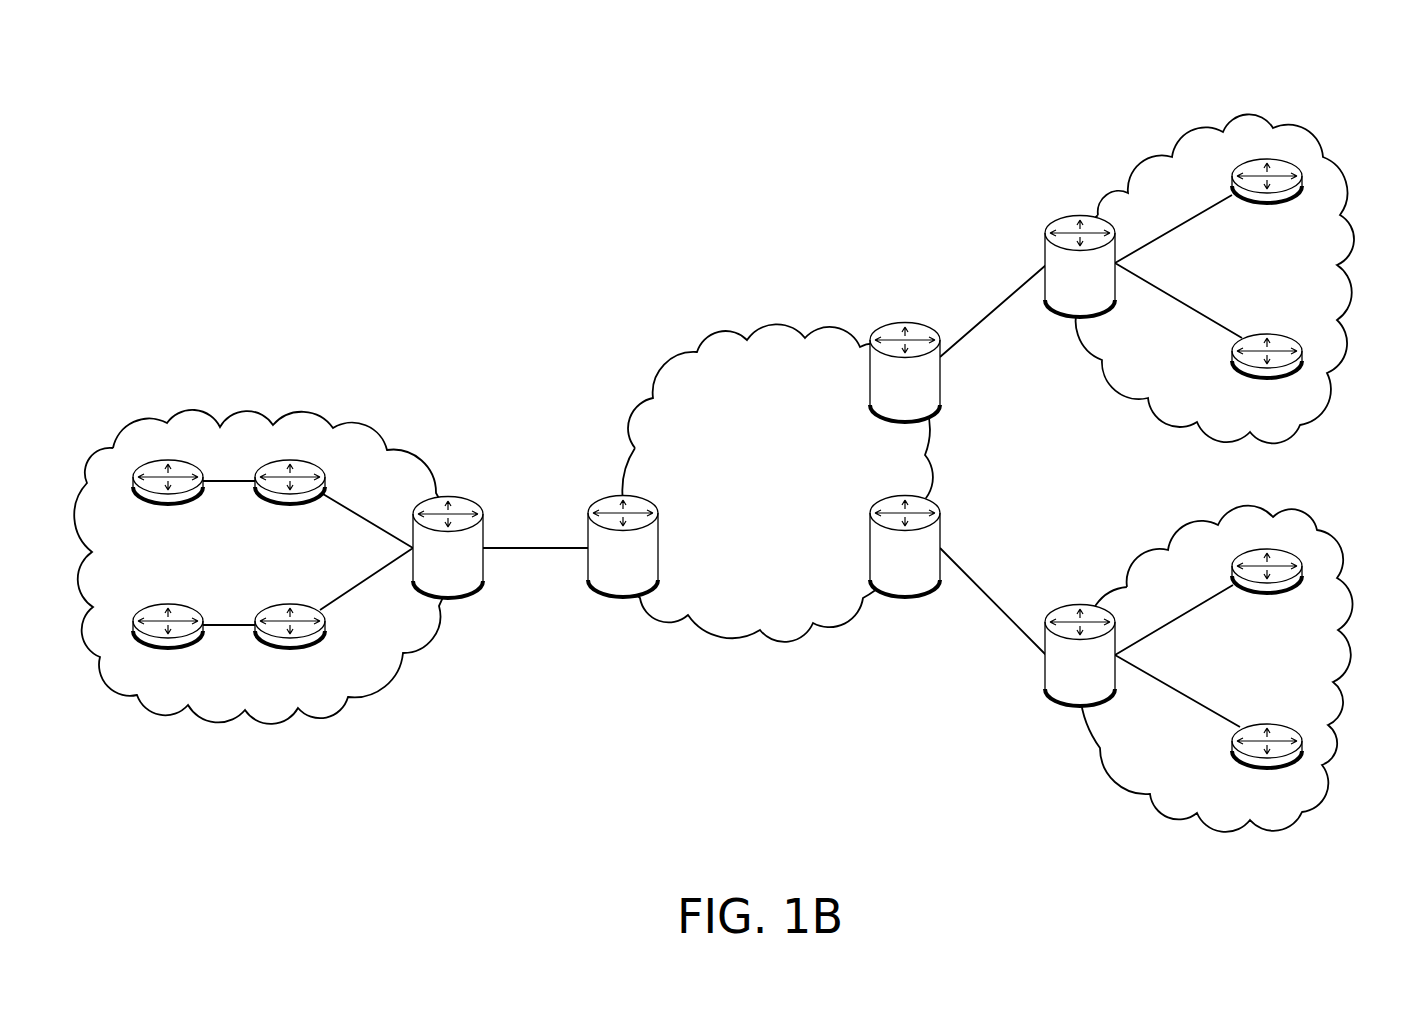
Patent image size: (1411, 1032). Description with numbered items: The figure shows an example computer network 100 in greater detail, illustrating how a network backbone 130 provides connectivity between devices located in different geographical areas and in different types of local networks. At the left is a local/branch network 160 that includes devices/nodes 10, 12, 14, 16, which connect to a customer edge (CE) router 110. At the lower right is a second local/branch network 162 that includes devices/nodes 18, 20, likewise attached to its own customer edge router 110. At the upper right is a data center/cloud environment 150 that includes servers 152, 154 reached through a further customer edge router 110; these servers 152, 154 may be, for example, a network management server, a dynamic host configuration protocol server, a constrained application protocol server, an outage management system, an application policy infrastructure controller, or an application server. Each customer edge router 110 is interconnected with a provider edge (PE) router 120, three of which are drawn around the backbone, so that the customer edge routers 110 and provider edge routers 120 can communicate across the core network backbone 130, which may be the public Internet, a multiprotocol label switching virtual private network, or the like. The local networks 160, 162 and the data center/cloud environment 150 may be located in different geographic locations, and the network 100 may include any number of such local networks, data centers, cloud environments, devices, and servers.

The computer network 100 is at (1316, 58).
The device/node 10 is at (168, 499).
The device/node 12 is at (290, 499).
The device/node 14 is at (168, 643).
The device/node 16 is at (290, 643).
The device/node 18 is at (1267, 764).
The device/node 20 is at (1267, 588).
The customer edge (CE) router 110 is at (431, 584).
The provider edge (PE) router 120 is at (606, 586).
The network backbone 130 is at (787, 505).
The data center/cloud environment 150 is at (1169, 138).
The server 152 is at (1267, 198).
The server 154 is at (1267, 374).
The local/branch network 160 is at (314, 399).
The local/branch network 162 is at (1096, 762).